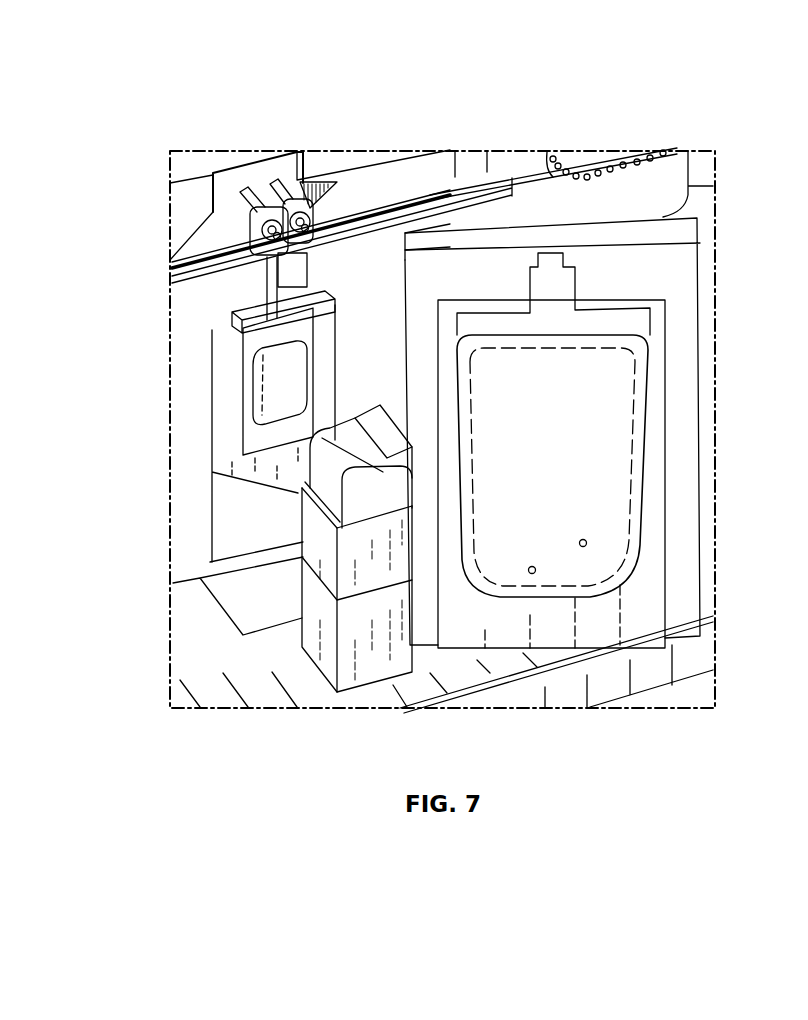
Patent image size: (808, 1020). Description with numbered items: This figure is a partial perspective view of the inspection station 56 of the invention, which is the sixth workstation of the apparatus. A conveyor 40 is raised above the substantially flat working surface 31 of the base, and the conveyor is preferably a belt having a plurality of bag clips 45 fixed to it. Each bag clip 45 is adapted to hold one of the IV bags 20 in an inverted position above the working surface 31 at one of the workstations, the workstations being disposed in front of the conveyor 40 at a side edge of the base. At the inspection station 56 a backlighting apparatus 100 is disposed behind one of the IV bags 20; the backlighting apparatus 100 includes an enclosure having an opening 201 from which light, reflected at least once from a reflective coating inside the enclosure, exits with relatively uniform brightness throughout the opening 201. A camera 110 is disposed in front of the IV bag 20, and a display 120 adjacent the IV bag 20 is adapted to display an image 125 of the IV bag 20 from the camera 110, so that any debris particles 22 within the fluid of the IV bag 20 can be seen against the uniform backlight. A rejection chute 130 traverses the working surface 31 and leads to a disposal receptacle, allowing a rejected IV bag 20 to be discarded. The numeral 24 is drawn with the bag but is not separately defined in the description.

The conveyor 40 is at (340, 262).
The backlighting apparatus 100 is at (388, 190).
The bag clip 45 is at (182, 279).
The opening 201 is at (335, 340).
The IV bag 20 is at (197, 381).
The hanger plate window 24 is at (237, 373).
The camera 110 is at (322, 467).
The rejection chute 130 is at (243, 592).
The working surface 31 is at (190, 636).
The display 120 is at (690, 277).
The image 125 is at (640, 393).
The debris particles 22 is at (586, 543).
The inspection station 56 is at (506, 687).